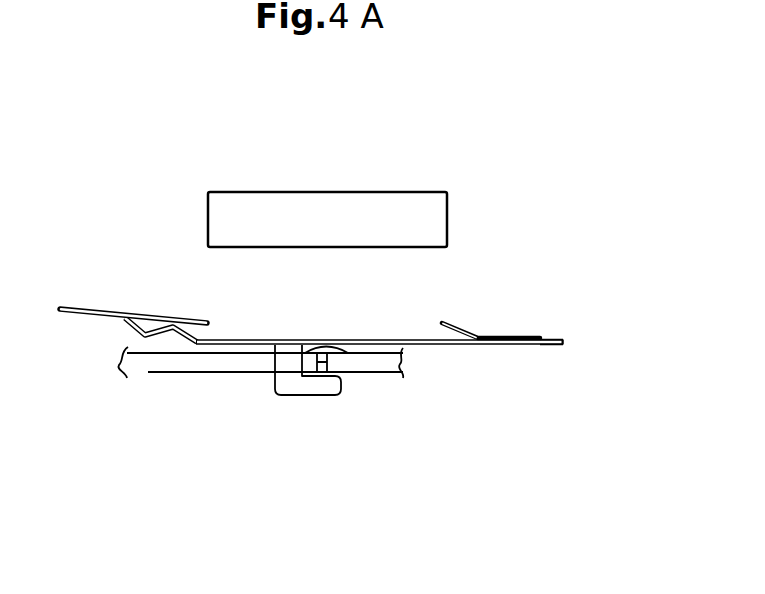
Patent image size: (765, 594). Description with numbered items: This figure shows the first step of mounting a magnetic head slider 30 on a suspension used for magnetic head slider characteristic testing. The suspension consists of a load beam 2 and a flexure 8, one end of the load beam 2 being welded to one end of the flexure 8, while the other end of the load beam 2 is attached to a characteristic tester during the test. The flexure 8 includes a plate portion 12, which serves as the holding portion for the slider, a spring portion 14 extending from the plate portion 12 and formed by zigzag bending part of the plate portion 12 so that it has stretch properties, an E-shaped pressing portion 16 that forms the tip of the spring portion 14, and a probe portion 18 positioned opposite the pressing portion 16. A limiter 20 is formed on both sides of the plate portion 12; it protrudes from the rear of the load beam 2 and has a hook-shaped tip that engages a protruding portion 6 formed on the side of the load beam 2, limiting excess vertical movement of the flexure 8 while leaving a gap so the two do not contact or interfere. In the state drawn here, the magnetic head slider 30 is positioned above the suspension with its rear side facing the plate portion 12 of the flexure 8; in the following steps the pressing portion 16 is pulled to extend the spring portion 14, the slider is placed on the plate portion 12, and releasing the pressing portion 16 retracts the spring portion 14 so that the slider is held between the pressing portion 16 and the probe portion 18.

The load beam 2 is at (153, 362).
The protruding portion 6 is at (327, 362).
The flexure 8 is at (550, 348).
The plate portion 12 is at (403, 340).
The spring portion 14 is at (133, 335).
The pressing portion 16 is at (108, 310).
The probe portion 18 is at (458, 334).
The limiter 20 is at (300, 388).
The magnetic head slider 30 is at (397, 213).